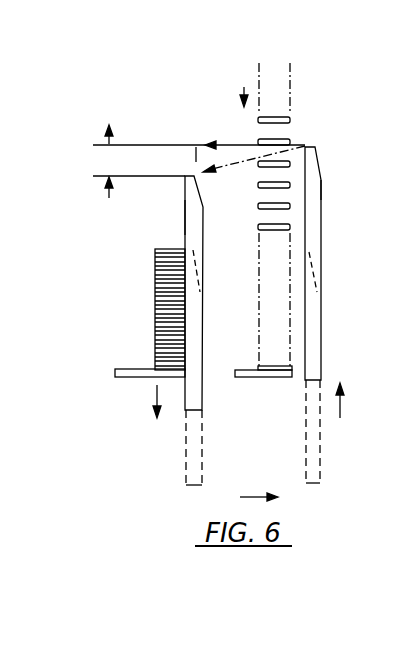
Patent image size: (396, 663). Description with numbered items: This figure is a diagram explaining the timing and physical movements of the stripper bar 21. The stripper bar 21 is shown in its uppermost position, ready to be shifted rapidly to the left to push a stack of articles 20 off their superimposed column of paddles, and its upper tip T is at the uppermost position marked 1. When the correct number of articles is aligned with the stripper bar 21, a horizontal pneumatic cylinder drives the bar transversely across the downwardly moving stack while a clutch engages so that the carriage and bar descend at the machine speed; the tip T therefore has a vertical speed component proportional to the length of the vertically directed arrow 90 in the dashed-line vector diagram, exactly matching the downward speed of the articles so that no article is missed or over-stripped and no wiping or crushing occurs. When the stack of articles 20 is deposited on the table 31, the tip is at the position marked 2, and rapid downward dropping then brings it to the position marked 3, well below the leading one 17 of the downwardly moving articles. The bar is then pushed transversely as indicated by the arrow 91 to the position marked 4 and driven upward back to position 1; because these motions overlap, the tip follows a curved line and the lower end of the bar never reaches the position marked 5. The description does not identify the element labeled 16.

The uppermost position 1 is at (318, 148).
The stack-deposit position 2 is at (181, 179).
The lower position 3 is at (195, 249).
The transverse return position 4 is at (309, 251).
The unreached lower position 5 is at (322, 485).
The slot 16 is at (262, 165).
The leading article 17 is at (257, 368).
The stack of articles 20 is at (148, 300).
The stripper bar 21 is at (185, 215).
The table 31 is at (116, 377).
The vertically directed arrow 90 is at (192, 171).
The transverse arrow 91 is at (250, 497).
The upper tip T is at (308, 147).